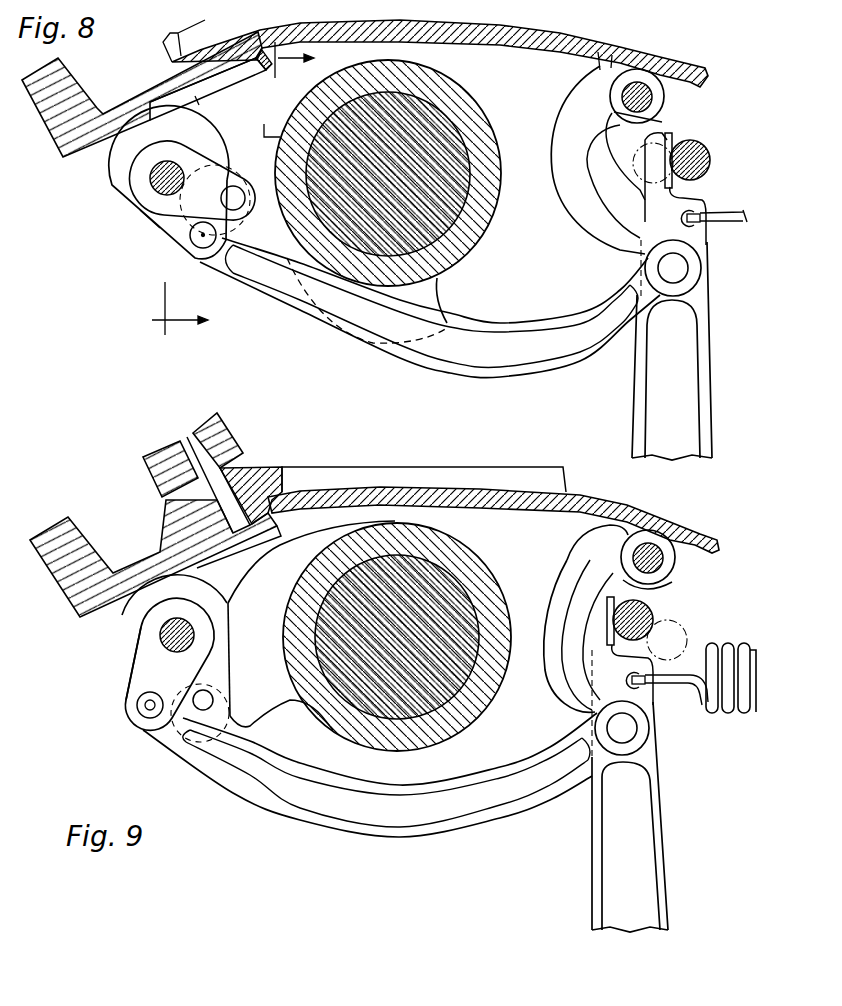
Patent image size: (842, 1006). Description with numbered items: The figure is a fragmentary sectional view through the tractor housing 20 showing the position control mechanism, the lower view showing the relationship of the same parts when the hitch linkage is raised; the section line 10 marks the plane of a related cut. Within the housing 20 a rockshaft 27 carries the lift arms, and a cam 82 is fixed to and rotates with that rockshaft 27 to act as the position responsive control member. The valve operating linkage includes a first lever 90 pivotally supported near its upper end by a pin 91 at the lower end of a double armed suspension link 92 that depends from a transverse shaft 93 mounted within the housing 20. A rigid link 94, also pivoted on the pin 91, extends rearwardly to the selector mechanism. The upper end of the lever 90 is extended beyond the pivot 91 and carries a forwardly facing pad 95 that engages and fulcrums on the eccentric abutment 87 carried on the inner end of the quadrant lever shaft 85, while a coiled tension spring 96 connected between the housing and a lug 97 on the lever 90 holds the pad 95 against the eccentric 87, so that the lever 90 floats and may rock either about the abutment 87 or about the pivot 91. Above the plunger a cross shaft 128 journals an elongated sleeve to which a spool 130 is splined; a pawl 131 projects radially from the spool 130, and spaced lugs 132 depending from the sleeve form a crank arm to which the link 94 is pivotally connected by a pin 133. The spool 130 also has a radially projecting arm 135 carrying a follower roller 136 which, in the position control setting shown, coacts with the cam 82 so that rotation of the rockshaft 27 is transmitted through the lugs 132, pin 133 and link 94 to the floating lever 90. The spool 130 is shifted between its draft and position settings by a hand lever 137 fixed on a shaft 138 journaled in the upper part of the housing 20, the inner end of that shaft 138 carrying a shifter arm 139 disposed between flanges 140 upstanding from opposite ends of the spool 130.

In FIG. 8, the section line 10- 10 is at (245, 188).
In FIG. 8, the tractor housing 20 is at (602, 42).
In FIG. 9, the tractor housing 20 is at (350, 492).
In FIG. 8, the rockshaft 27 is at (460, 143).
In FIG. 9, the rockshaft 27 is at (463, 597).
In FIG. 8, the cam 82 is at (437, 306).
In FIG. 9, the cam 82 is at (277, 576).
In FIG. 8, the shaft 85 is at (645, 160).
In FIG. 9, the shaft 85 is at (676, 628).
In FIG. 8, the eccentric abutment 87 is at (700, 147).
In FIG. 9, the eccentric abutment 87 is at (645, 617).
In FIG. 8, the first lever 90 is at (708, 403).
In FIG. 9, the first lever 90 is at (600, 907).
In FIG. 8, the pin 91 is at (683, 270).
In FIG. 9, the pin 91 is at (634, 729).
In FIG. 8, the double armed suspension link 92 is at (582, 211).
In FIG. 9, the double armed suspension link 92 is at (562, 674).
In FIG. 8, the transverse shaft 93 is at (654, 96).
In FIG. 9, the transverse shaft 93 is at (662, 562).
In FIG. 8, the rigid link 94 is at (568, 356).
In FIG. 9, the rigid link 94 is at (460, 835).
In FIG. 8, the pad 95 is at (673, 146).
In FIG. 9, the coiled tension spring 96 is at (735, 647).
In FIG. 8, the lug 97 is at (706, 236).
In FIG. 8, the cross shaft 128 is at (167, 140).
In FIG. 9, the cross shaft 128 is at (177, 634).
In FIG. 8, the spool 130 is at (127, 189).
In FIG. 9, the spool 130 is at (138, 636).
In FIG. 9, the pawl 131 is at (145, 703).
In FIG. 8, the lugs 132 is at (178, 230).
In FIG. 9, the lugs 132 is at (148, 656).
In FIG. 8, the pin 133 is at (197, 244).
In FIG. 9, the pin 133 is at (148, 708).
In FIG. 8, the arm 135 is at (205, 158).
In FIG. 8, the follower roller 136 is at (258, 171).
In FIG. 9, the follower roller 136 is at (238, 713).
In FIG. 9, the hand lever 137 is at (153, 479).
In FIG. 9, the shaft 138 is at (175, 446).
In FIG. 8, the shifter arm 139 is at (199, 105).
In FIG. 9, the shifter arm 139 is at (214, 562).
In FIG. 8, the flanges 140 is at (108, 178).
In FIG. 9, the flanges 140 is at (200, 592).